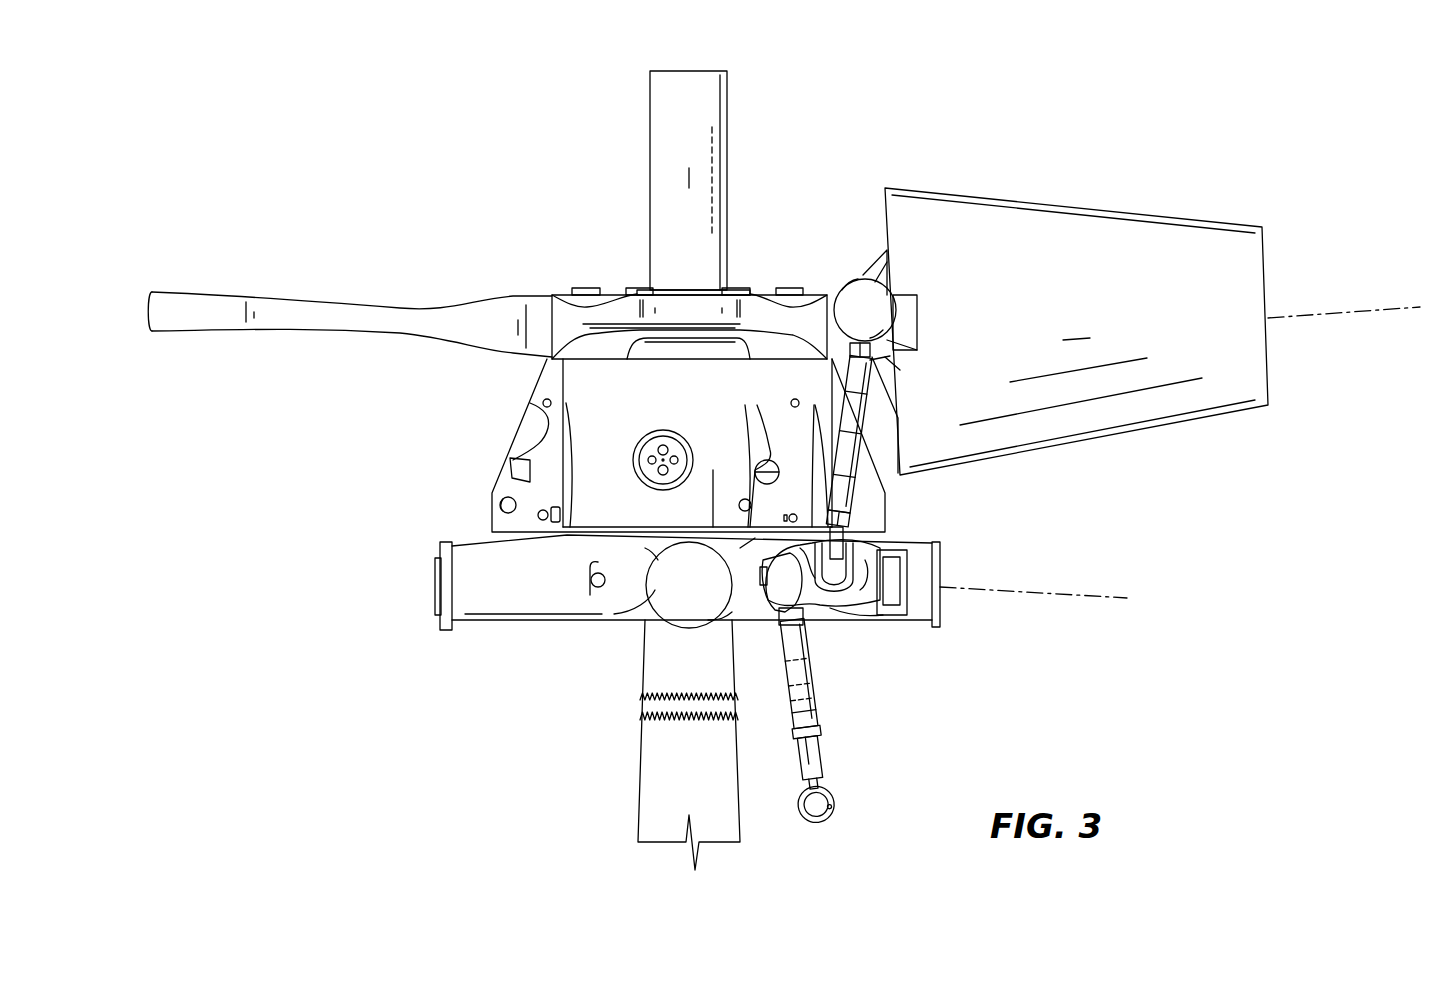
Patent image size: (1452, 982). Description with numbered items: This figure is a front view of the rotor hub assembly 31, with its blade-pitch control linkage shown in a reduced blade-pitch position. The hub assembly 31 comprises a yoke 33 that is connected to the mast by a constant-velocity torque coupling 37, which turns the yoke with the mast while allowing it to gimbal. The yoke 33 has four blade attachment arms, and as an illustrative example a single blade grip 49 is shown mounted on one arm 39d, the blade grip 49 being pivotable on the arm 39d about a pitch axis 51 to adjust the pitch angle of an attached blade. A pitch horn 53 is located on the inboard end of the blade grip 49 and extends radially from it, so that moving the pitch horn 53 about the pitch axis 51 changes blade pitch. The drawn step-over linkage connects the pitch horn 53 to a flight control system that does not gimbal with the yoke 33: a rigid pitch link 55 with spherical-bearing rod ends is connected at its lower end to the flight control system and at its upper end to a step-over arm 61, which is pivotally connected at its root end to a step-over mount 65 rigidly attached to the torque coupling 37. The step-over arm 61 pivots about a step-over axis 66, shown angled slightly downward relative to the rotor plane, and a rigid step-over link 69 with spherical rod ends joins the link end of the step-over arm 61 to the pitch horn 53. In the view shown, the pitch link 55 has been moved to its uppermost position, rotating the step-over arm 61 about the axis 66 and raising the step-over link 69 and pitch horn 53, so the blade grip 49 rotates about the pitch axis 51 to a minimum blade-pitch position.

The rotor hub assembly 31 is at (480, 220).
The yoke 33 is at (272, 291).
The constant-velocity torque coupling 37 is at (515, 434).
The blade attachment arm 39d is at (834, 285).
The blade grip 49 is at (1110, 430).
The pitch axis 51 is at (1373, 313).
The pitch horn 53 is at (908, 315).
The pitch link 55 is at (822, 699).
The step-over arm 61 is at (864, 584).
The step-over mount 65 is at (940, 607).
The step-over axis 66 is at (1057, 590).
The step-over link 69 is at (846, 487).